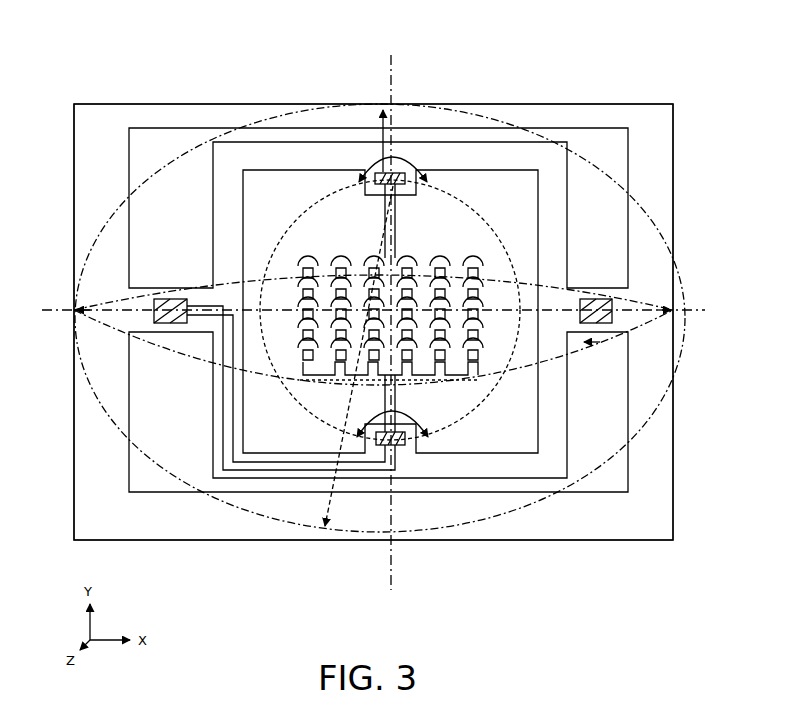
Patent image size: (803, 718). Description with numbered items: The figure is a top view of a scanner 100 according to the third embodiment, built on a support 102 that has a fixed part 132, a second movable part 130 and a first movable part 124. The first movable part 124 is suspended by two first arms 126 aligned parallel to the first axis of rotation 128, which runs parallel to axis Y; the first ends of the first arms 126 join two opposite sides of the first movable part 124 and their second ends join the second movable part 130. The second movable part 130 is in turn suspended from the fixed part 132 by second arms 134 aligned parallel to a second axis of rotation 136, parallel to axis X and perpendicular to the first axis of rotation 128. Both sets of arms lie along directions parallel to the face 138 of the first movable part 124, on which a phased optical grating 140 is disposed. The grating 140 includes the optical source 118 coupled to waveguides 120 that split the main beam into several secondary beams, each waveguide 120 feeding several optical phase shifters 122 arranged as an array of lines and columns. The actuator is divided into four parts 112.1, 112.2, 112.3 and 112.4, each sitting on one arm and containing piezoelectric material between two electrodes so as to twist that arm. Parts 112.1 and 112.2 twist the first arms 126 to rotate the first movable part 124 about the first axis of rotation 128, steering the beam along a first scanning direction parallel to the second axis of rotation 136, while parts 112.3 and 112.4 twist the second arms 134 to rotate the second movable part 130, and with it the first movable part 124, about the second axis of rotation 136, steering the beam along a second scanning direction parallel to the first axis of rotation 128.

The scanner 100 is at (632, 56).
The support 102 is at (80, 101).
The actuator part 112.1 is at (393, 172).
The actuator part 112.2 is at (378, 447).
The actuator part 112.3 is at (588, 279).
The actuator part 112.4 is at (172, 278).
The optical source 118 is at (415, 388).
The waveguides 120 is at (418, 400).
The optical phase shifters 122 is at (483, 388).
The first movable part 124 is at (438, 224).
The first arms 126 is at (412, 162).
The first axis of rotation 128 is at (384, 80).
The second movable part 130 is at (284, 150).
The fixed part 132 is at (650, 443).
The second arms 134 is at (175, 346).
The second axis of rotation 136 is at (707, 310).
The face 138 is at (320, 226).
The phased optical grating 140 is at (472, 246).